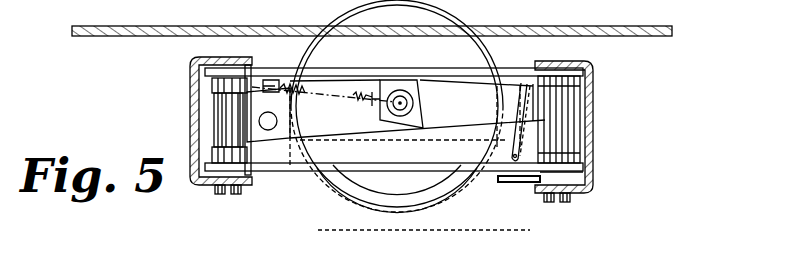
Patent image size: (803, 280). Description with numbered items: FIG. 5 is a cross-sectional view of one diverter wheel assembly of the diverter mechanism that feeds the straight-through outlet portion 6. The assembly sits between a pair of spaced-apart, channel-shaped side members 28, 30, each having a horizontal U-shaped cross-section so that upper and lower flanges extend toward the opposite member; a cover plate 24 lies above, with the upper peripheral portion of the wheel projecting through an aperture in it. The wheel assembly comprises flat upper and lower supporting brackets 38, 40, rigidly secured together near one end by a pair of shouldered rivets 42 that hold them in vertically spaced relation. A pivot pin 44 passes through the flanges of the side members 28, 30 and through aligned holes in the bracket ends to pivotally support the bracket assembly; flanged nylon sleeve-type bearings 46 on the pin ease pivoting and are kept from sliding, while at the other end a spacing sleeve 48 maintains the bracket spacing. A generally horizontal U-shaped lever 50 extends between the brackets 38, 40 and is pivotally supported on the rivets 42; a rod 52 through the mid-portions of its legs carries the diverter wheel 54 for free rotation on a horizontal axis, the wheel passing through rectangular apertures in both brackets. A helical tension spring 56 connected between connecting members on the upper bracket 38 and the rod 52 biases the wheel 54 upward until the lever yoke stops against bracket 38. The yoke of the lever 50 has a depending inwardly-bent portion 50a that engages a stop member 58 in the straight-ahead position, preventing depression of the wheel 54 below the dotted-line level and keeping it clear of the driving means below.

The cover plate 24 is at (627, 32).
The side member 28 is at (196, 62).
The side member 30 is at (596, 87).
The upper supporting bracket 38 is at (356, 70).
The lower supporting bracket 40 is at (250, 173).
The rivets 42 is at (283, 155).
The pivot pin 44 is at (218, 195).
The sleeve-type bearings 46 is at (216, 85).
The spacing sleeve 48 is at (578, 154).
The U-shaped lever 50 is at (459, 91).
The inwardly-bent portion 50a is at (512, 152).
The rod 52 is at (413, 103).
The diverter wheel 54 is at (445, 31).
The helical tension springs 56 is at (353, 98).
The stop member 58 is at (505, 183).
The outlet portion 6 is at (159, 132).